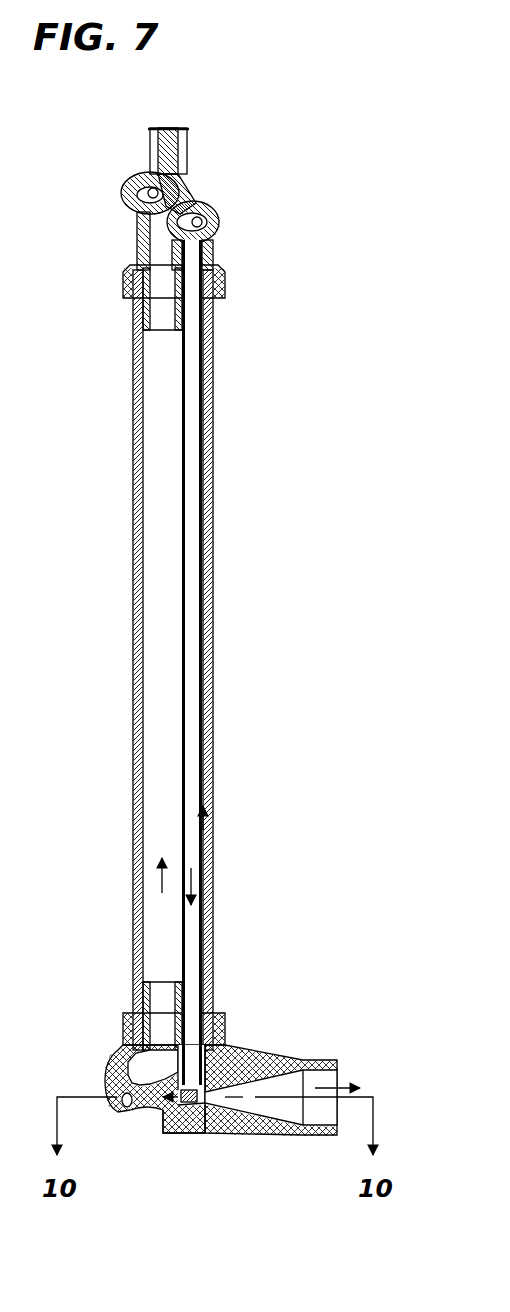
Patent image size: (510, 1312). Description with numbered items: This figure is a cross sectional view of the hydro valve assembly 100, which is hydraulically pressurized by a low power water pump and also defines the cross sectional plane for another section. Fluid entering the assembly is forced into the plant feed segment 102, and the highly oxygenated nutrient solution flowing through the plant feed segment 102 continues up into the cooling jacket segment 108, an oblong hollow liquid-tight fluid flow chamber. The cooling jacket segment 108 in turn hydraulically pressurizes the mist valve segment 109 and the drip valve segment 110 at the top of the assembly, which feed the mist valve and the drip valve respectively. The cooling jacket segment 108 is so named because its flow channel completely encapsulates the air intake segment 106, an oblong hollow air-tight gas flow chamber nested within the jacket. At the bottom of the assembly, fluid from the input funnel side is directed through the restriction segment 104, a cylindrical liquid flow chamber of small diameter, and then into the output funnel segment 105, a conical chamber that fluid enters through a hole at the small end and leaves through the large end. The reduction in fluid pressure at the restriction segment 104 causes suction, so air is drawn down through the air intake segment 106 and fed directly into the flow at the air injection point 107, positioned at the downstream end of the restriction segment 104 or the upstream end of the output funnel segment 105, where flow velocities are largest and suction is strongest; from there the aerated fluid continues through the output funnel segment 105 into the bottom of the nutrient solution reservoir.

The hydro valve assembly 100 is at (278, 134).
The plant feed segment 102 is at (118, 1050).
The restriction segment 104 is at (163, 1130).
The output funnel segment 105 is at (282, 1087).
The air intake segment 106 is at (217, 220).
The air injection point 107 is at (197, 1105).
The cooling jacket segment 108 is at (155, 800).
The mist valve segment 109 is at (168, 127).
The drip valve segment 110 is at (122, 192).